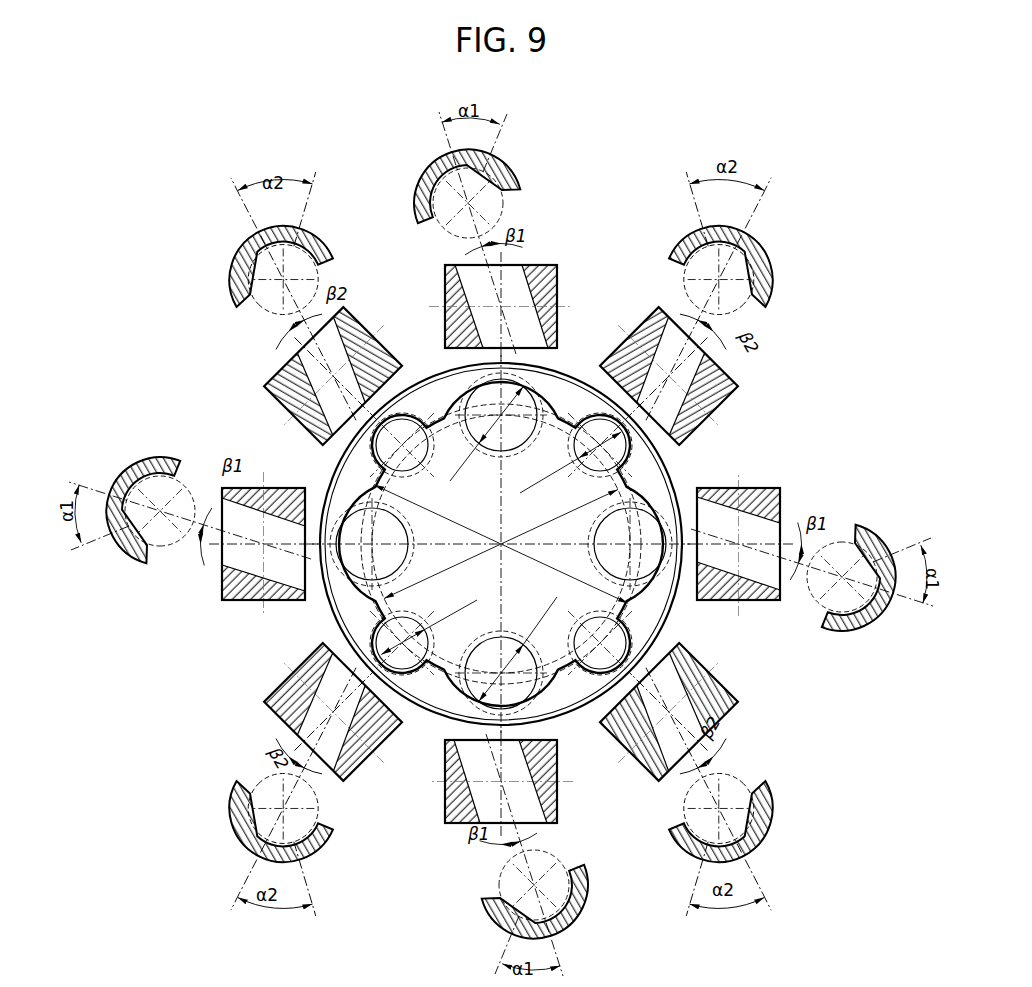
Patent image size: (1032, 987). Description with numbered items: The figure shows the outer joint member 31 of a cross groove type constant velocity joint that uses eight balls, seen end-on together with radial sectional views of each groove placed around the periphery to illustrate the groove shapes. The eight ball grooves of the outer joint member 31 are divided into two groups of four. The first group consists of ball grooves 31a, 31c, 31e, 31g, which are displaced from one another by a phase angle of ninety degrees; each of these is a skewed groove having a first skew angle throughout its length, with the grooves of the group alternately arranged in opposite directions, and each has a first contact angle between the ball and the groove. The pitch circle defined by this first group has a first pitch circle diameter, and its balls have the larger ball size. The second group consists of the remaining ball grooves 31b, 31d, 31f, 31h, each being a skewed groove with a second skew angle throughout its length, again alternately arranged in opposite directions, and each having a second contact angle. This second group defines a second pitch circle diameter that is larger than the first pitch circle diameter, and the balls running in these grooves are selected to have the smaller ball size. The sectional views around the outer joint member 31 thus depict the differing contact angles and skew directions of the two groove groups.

The outer joint member 31 is at (572, 392).
The ball groove 31a is at (446, 268).
The ball groove 31b is at (656, 308).
The ball groove 31c is at (745, 486).
The ball groove 31d is at (735, 700).
The ball groove 31e is at (560, 815).
The ball groove 31f is at (346, 772).
The ball groove 31g is at (238, 606).
The ball groove 31h is at (276, 384).